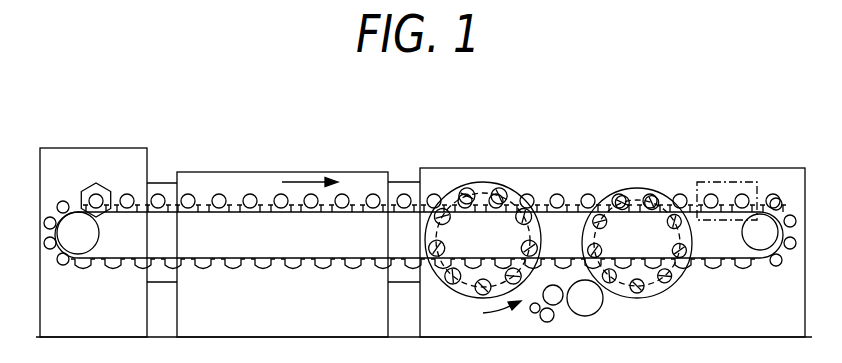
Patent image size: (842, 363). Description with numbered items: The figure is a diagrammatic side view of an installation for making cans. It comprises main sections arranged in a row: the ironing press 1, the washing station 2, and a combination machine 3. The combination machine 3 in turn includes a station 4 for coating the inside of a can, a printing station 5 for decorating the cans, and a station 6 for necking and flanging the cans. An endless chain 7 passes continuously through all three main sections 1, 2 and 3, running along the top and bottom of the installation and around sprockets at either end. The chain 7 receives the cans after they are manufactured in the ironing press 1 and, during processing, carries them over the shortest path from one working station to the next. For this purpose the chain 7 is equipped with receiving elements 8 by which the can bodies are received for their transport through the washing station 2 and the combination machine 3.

The ironing press 1 is at (90, 163).
The washing station 2 is at (267, 152).
The combination machine 3 is at (569, 150).
The station for coating the inside of a can 4 is at (483, 188).
The printing station 5 is at (637, 187).
The station for necking and flanging the cans 6 is at (730, 185).
The endless chain 7 is at (345, 258).
The receiving elements 8 is at (232, 266).